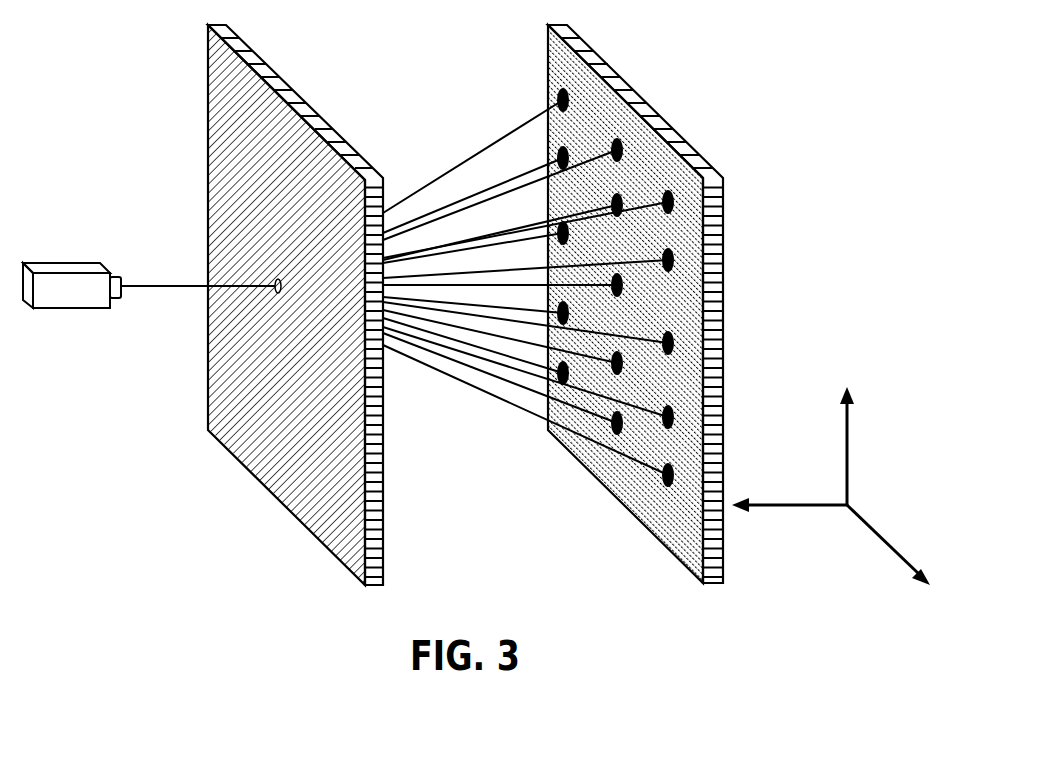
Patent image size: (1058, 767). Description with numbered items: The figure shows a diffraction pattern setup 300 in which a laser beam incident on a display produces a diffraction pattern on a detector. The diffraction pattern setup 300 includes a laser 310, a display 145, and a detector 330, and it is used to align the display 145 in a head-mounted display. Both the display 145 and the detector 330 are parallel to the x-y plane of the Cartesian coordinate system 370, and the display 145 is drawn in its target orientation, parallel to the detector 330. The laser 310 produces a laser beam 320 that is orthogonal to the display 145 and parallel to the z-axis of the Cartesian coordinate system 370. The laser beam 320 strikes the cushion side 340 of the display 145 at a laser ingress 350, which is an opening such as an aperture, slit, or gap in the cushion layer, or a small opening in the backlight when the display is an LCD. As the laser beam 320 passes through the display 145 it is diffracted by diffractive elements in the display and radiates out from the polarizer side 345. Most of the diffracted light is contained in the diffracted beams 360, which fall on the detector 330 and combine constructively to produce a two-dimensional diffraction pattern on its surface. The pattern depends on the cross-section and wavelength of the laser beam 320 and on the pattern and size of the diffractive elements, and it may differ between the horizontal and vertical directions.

The diffraction pattern setup 300 is at (787, 113).
The display 145 is at (260, 433).
The laser 310 is at (67, 268).
The laser beam 320 is at (177, 288).
The detector 330 is at (723, 253).
The cushion side 340 is at (307, 498).
The polarizer side 345 is at (400, 471).
The laser ingress 350 is at (278, 280).
The diffracted beams 360 is at (462, 163).
The Cartesian coordinate system 370 is at (842, 510).